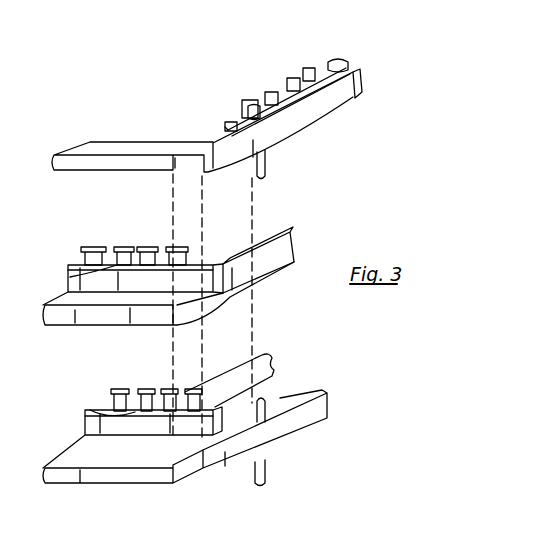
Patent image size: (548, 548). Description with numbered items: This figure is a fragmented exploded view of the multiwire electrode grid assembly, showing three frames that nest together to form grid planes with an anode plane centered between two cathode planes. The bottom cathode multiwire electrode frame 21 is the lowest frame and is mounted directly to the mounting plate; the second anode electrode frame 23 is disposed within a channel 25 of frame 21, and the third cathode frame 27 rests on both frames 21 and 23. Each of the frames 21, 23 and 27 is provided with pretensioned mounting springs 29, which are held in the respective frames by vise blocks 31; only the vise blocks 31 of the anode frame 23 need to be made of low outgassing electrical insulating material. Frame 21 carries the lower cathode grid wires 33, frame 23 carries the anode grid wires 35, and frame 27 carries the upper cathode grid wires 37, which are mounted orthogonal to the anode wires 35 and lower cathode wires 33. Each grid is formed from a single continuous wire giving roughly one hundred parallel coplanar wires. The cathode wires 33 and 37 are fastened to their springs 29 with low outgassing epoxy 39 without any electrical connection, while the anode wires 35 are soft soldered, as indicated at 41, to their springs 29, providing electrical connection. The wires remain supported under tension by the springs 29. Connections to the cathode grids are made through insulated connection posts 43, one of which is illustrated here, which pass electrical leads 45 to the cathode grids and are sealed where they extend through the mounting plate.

The bottom (cathode) multiwire electrode frame 21 is at (293, 428).
The second (anode) electrode frame 23 is at (75, 312).
The channel 25 is at (284, 394).
The third (cathode) frame 27 is at (290, 131).
The pretensioned mounting springs 29 is at (345, 72).
The vise blocks 31 is at (348, 96).
The lower cathode grid wires 33 is at (198, 360).
The anode grid wires 35 is at (207, 217).
The upper cathode grid wires 37 is at (213, 72).
The low outgassing epoxy 39 is at (324, 56).
The soft solder 41 is at (176, 256).
The insulated connection posts 43 is at (267, 173).
The electrical leads 45 is at (240, 107).